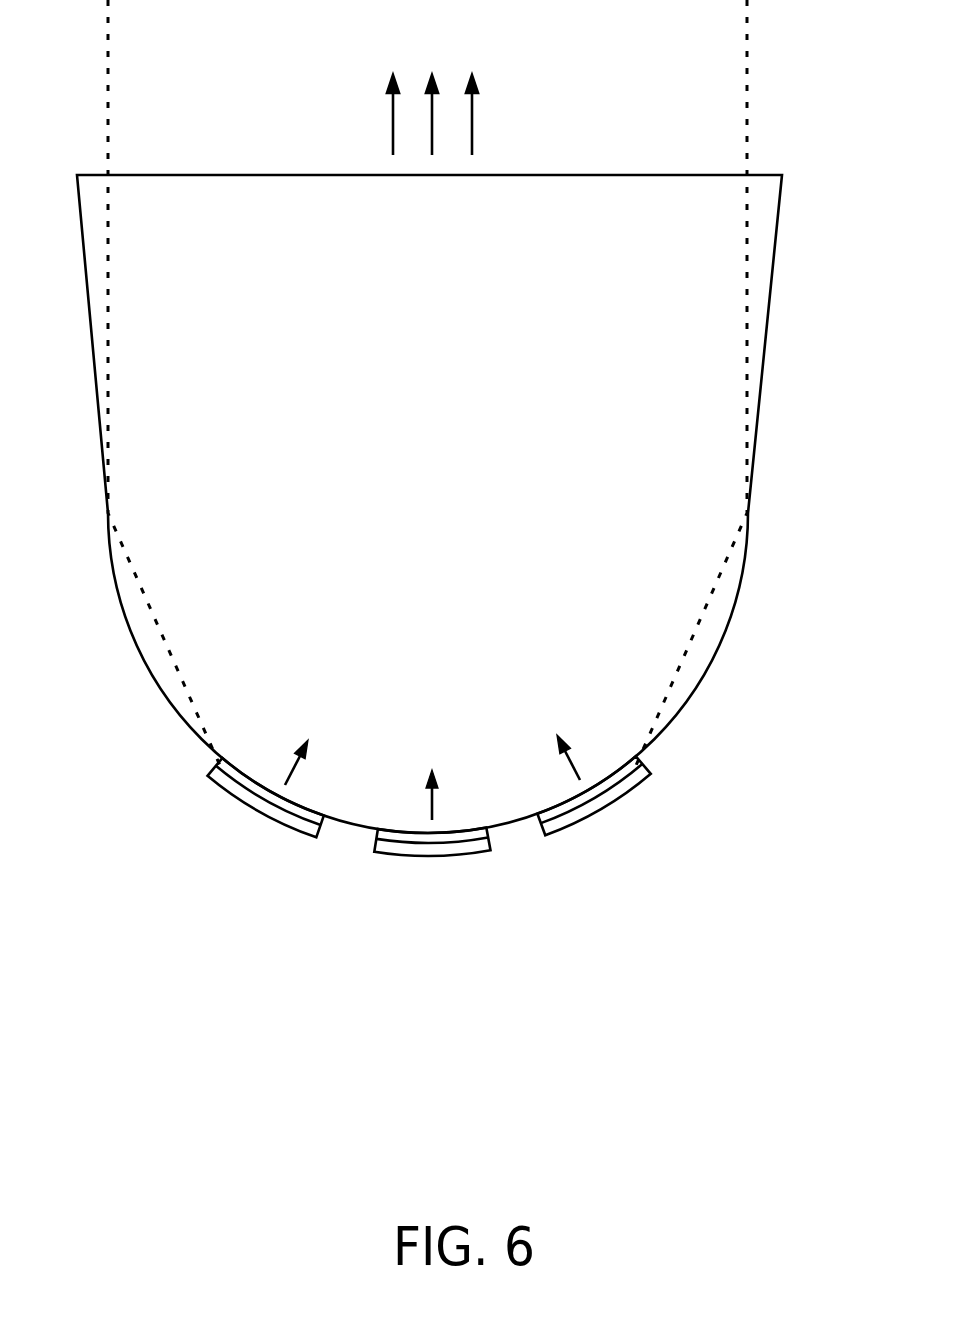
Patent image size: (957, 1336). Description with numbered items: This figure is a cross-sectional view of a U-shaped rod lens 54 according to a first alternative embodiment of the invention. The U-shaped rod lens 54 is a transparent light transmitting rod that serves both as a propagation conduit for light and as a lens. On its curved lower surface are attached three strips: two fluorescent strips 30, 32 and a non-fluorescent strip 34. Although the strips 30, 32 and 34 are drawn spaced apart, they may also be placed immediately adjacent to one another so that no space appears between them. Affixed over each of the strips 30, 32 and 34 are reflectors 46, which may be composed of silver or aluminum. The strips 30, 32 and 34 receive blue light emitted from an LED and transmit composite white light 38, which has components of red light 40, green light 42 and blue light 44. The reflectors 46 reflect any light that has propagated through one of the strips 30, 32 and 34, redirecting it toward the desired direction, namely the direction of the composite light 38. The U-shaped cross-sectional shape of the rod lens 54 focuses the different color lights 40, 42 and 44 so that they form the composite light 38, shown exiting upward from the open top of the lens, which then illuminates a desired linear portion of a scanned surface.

The fluorescent strip 30 is at (640, 768).
The fluorescent strip 32 is at (382, 835).
The non-fluorescent strip 34 is at (227, 768).
The composite white light 38 is at (472, 135).
The red light 40 is at (577, 765).
The green light 42 is at (435, 807).
The blue light 44 is at (287, 768).
The reflector 46 is at (303, 827).
The U-shaped rod lens 54 is at (740, 598).